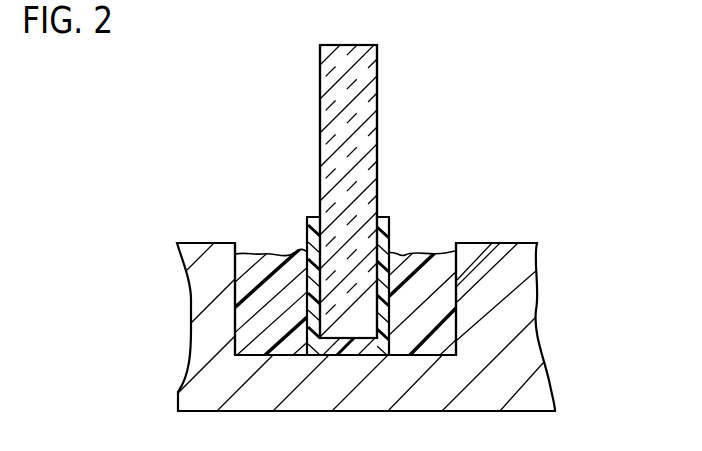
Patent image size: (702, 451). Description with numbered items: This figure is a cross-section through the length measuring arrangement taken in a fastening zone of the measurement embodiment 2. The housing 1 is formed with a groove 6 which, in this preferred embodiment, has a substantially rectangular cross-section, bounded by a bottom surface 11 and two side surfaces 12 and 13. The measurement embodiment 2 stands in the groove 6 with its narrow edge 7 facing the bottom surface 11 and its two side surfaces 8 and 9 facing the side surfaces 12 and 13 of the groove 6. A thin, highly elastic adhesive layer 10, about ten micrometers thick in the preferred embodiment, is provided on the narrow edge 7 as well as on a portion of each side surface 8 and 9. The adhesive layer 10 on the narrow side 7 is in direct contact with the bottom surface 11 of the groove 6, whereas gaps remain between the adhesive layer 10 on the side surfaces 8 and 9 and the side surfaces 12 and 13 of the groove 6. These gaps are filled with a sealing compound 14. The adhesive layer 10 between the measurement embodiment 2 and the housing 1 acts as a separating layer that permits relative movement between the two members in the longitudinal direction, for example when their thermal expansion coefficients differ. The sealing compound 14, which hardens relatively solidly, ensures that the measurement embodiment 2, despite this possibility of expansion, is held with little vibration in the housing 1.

The housing 1 is at (520, 311).
The measurement embodiment 2 is at (363, 80).
The groove 6 is at (270, 248).
The narrow edge 7 is at (349, 328).
The side surface 8 is at (384, 132).
The side surface 9 is at (315, 134).
The adhesive layer 10 is at (311, 212).
The bottom surface 11 is at (423, 365).
The side surface of the groove 12 is at (464, 294).
The side surface of the groove 13 is at (225, 334).
The sealing compound 14 is at (410, 267).